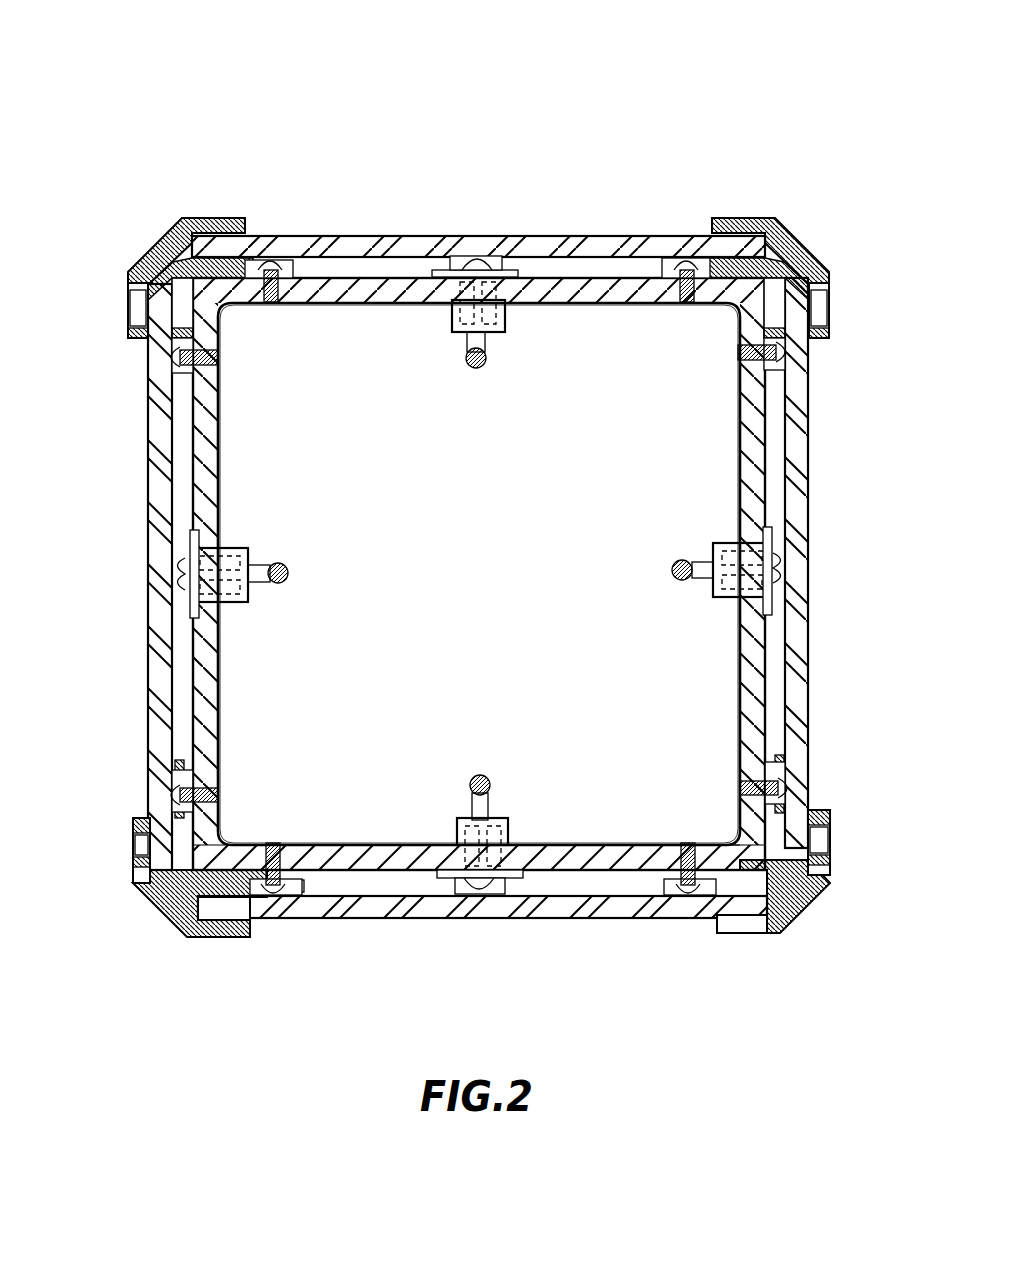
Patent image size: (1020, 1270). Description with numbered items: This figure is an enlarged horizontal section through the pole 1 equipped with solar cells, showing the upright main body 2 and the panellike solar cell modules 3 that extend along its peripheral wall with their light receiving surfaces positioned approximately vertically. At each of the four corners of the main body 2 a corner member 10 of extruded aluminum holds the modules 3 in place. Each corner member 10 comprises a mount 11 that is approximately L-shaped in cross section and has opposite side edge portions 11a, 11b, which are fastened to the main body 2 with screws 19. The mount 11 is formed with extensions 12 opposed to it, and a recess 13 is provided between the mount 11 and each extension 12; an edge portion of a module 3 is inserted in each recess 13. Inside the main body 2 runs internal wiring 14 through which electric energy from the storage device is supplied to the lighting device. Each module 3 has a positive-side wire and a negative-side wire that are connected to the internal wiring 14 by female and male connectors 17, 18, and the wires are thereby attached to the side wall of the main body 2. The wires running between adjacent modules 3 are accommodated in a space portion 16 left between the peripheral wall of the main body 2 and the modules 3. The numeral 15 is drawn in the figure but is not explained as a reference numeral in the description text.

The pole 1 is at (707, 142).
The main body 2 is at (392, 845).
The solar cell module 3 is at (592, 240).
The corner member 10 is at (157, 240).
The mount 11 is at (205, 832).
The side edge portion 11a is at (212, 768).
The side edge portion 11b is at (738, 758).
The extension 12 is at (818, 830).
The recess 13 is at (165, 842).
The internal wiring 14 is at (478, 372).
The nut plate 15 is at (462, 268).
The space portion 16 is at (552, 262).
The female connector 17 is at (506, 312).
The male connector 18 is at (455, 255).
The screw 19 is at (287, 240).